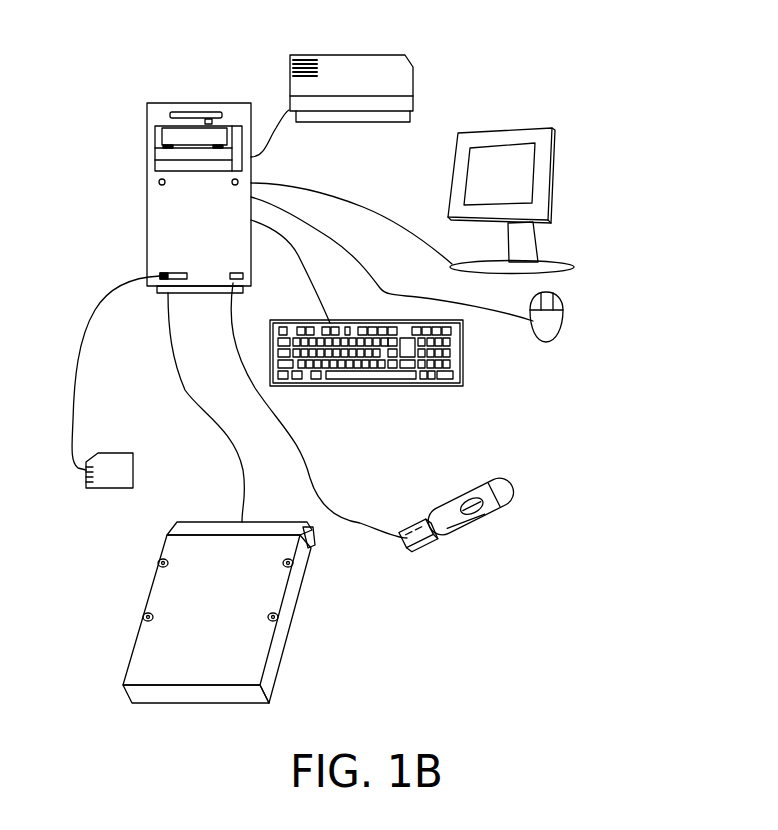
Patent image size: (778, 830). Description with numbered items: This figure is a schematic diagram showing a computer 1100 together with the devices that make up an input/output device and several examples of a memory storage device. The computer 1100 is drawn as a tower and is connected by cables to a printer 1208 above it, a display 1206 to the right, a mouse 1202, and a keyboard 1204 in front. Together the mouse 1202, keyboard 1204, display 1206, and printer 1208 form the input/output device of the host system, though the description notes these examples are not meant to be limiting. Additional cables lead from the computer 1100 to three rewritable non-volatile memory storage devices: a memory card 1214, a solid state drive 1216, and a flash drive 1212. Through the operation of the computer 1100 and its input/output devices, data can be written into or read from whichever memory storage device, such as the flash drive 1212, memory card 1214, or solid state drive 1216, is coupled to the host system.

The computer 1100 is at (201, 103).
The printer 1208 is at (347, 55).
The monitor 1206 is at (512, 128).
The mouse 1202 is at (563, 322).
The keyboard 1204 is at (463, 364).
The memory card 1214 is at (133, 463).
The solid state drive 1216 is at (267, 511).
The flash drive 1212 is at (460, 503).